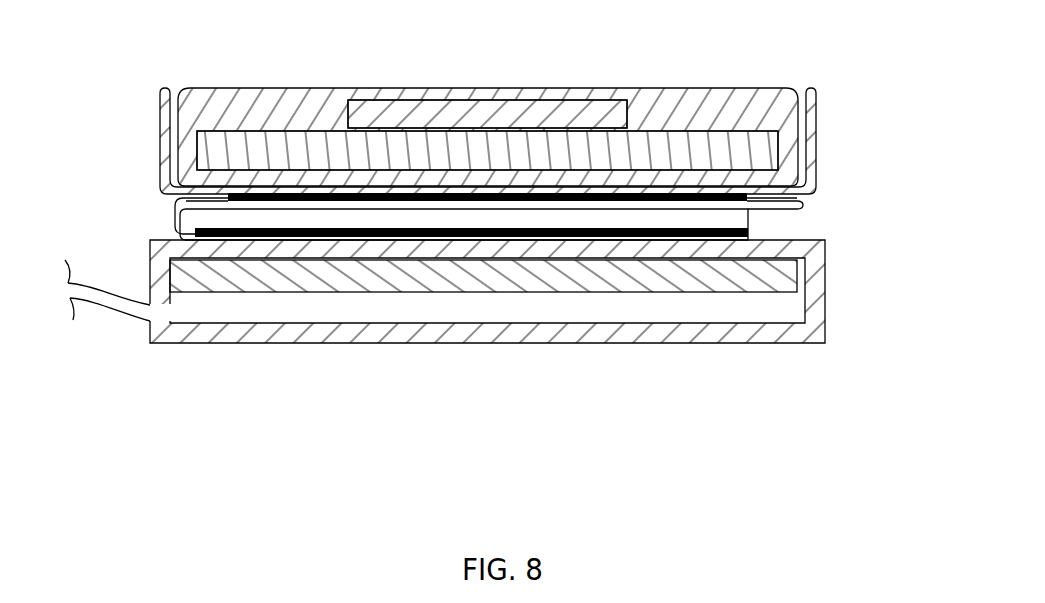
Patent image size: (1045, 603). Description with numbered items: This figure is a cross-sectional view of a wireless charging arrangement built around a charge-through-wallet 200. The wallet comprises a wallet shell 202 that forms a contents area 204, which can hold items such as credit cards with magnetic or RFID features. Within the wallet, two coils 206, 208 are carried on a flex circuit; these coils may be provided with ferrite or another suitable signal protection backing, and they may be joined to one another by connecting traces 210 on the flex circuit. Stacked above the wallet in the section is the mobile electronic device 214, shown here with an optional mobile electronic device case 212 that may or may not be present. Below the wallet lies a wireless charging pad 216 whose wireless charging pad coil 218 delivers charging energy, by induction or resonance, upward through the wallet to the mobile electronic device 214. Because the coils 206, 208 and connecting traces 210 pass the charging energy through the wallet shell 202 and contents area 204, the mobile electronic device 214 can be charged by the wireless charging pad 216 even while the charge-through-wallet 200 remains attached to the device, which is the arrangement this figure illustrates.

The charge-through-wallet 200 is at (489, 260).
The wallet shell 202 is at (795, 207).
The contents area 204 is at (730, 216).
The coil 206 is at (557, 203).
The coil 208 is at (428, 233).
The connecting traces 210 is at (222, 233).
The mobile electronic device case 212 is at (810, 122).
The mobile electronic device 214 is at (227, 98).
The wireless charging pad 216 is at (826, 317).
The wireless charging pad coil 218 is at (778, 278).